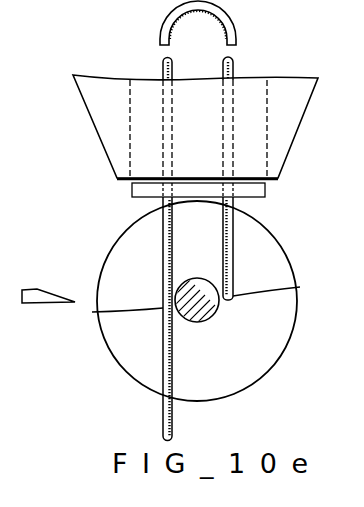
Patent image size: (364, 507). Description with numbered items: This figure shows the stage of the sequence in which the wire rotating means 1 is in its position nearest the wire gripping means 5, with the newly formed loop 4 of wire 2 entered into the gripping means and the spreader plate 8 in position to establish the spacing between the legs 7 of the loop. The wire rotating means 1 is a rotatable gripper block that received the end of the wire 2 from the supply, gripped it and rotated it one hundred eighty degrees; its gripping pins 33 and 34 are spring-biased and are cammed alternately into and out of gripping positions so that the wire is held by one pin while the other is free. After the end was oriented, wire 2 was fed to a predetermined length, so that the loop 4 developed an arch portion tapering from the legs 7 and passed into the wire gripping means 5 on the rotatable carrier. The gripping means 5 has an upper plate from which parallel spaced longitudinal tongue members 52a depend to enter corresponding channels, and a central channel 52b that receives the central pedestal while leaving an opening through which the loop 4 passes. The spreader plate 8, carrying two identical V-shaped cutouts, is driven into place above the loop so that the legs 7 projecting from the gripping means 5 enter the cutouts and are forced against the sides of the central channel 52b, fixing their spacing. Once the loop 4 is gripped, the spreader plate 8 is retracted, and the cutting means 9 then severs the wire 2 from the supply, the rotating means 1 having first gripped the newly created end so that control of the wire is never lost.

The wire rotating means 1 is at (272, 383).
The wire 2 is at (164, 413).
The loop 4 is at (163, 14).
The wire gripping means 5 is at (299, 158).
The legs 7 is at (222, 268).
The spreader plate 8 is at (265, 189).
The cutting means 9 is at (36, 286).
The gripping pin 33 is at (236, 310).
The gripping pin 34 is at (116, 315).
The tongue members 52a is at (147, 88).
The central channel 52b is at (205, 86).